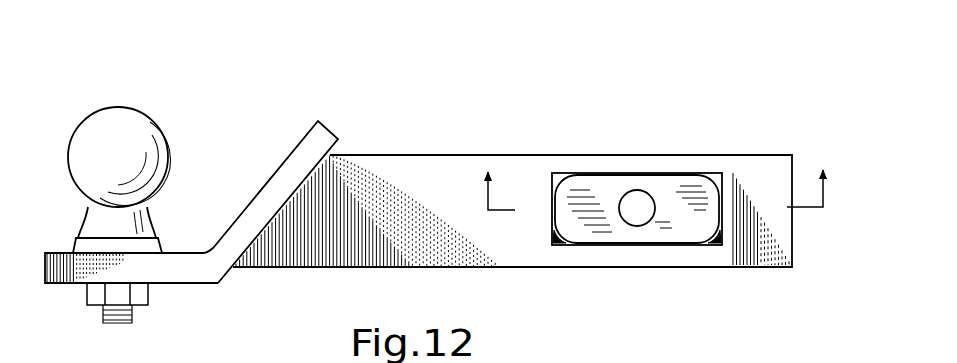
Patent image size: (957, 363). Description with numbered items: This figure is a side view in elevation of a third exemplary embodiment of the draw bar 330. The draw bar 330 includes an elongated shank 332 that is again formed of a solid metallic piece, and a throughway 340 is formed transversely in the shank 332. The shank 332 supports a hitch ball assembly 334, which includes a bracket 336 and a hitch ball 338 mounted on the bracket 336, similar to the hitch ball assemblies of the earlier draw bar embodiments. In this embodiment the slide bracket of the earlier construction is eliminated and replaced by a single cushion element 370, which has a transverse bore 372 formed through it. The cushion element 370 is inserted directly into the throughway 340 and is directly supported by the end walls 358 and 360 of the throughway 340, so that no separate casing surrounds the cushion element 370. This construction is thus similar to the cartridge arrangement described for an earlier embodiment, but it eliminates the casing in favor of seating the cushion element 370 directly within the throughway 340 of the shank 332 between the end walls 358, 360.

The draw bar 330 is at (531, 69).
The elongated shank 332 is at (380, 163).
The hitch ball assembly 334 is at (183, 185).
The bracket 336 is at (214, 268).
The hitch ball 338 is at (143, 103).
The throughway 340 is at (562, 247).
The end wall 358 is at (707, 243).
The end wall 360 is at (560, 172).
The cushion element 370 is at (669, 235).
The transverse bore 372 is at (645, 190).